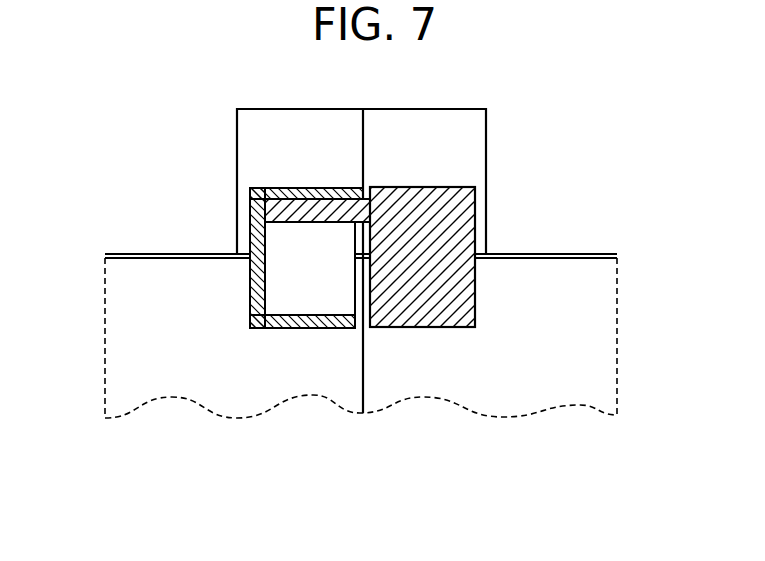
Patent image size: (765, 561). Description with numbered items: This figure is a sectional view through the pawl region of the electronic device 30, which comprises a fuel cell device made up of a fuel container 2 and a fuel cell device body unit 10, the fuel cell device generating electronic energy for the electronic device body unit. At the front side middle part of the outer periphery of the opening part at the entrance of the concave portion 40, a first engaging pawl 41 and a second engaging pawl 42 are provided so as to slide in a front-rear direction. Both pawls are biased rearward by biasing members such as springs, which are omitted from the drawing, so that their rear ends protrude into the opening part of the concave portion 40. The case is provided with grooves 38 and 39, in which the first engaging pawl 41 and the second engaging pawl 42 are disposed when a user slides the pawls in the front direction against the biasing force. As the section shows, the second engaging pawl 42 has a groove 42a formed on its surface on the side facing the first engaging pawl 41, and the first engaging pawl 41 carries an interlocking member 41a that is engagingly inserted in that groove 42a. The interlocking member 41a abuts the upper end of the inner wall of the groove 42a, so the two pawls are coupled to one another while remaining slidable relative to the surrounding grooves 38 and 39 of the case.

The fuel container 2 is at (128, 340).
The fuel cell device body unit 10 is at (600, 332).
The electronic device 30 is at (615, 88).
The groove 38 is at (463, 130).
The groove 39 is at (253, 138).
The concave portion 40 is at (560, 257).
The first engaging pawl 41 is at (458, 226).
The interlocking member 41a is at (308, 207).
The second engaging pawl 42 is at (250, 223).
The groove 42a is at (266, 300).